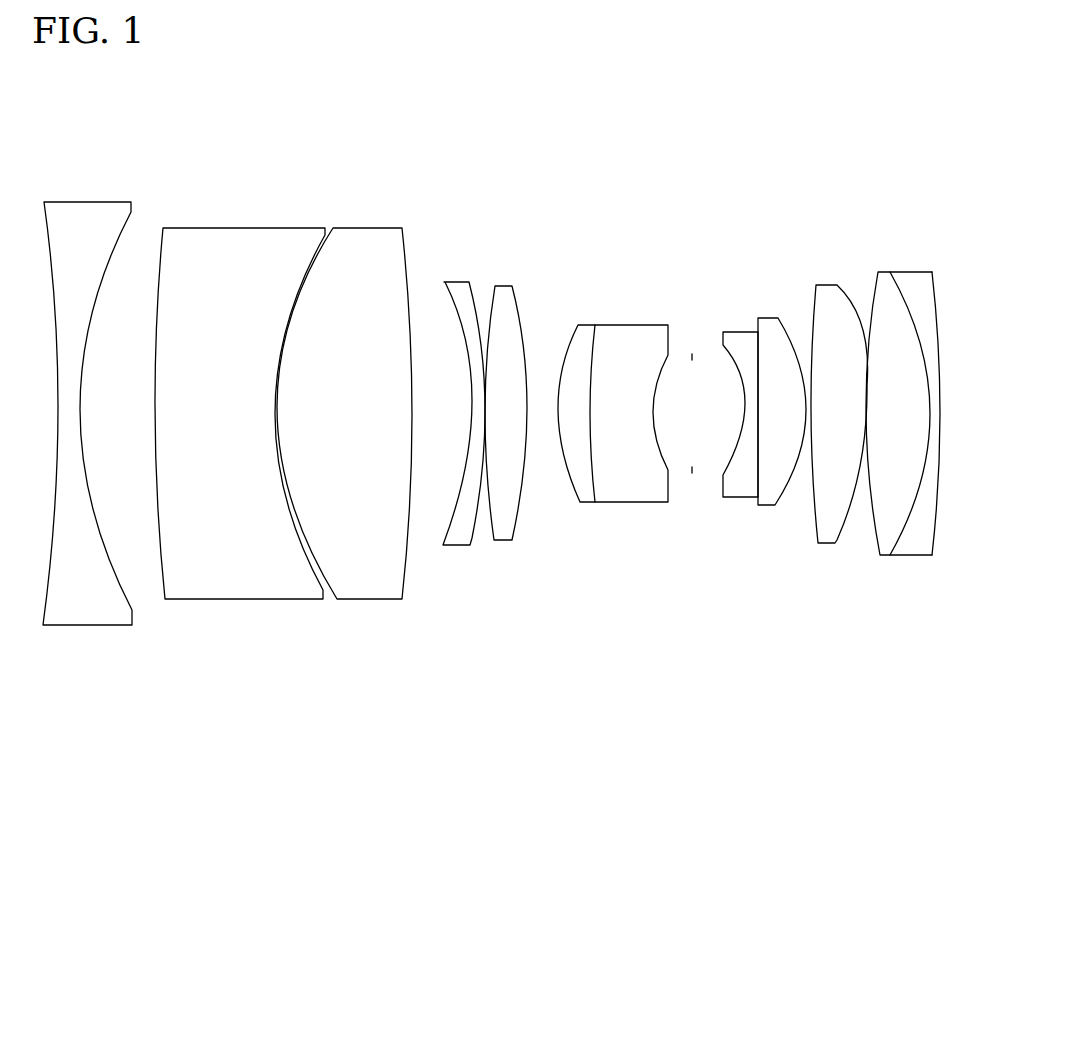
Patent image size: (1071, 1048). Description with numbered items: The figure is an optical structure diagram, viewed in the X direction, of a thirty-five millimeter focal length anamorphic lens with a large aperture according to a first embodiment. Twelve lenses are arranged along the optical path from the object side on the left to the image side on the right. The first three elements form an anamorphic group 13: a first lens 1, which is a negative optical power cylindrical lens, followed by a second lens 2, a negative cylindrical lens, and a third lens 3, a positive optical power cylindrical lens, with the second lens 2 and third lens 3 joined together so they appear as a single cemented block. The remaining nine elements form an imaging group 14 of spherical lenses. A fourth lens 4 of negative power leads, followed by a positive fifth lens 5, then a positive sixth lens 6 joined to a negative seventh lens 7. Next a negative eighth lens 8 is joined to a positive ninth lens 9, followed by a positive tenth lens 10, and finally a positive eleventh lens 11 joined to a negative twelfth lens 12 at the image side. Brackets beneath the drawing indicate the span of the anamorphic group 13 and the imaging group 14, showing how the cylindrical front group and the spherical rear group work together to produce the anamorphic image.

The first lens 1 is at (91, 563).
The second lens 2 is at (229, 252).
The third lens 3 is at (368, 563).
The fourth lens 4 is at (450, 527).
The fifth lens 5 is at (506, 286).
The sixth lens 6 is at (578, 357).
The seventh lens 7 is at (645, 357).
The eighth lens 8 is at (738, 357).
The ninth lens 9 is at (783, 357).
The tenth lens 10 is at (838, 357).
The eleventh lens 11 is at (893, 357).
The twelfth lens 12 is at (921, 523).
The anamorphic group 13 is at (242, 824).
The imaging group 14 is at (677, 822).